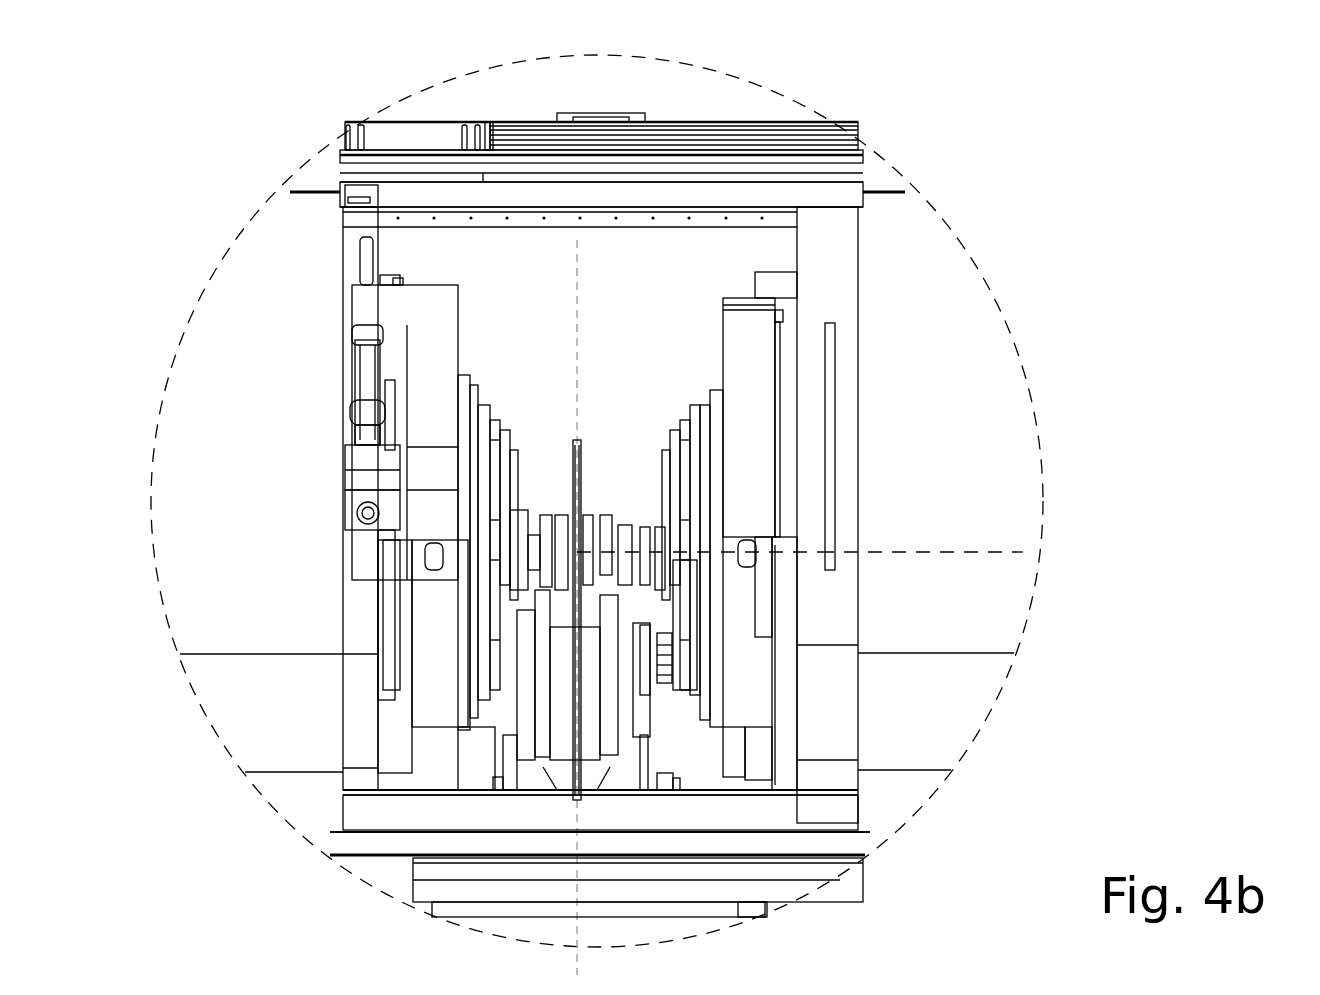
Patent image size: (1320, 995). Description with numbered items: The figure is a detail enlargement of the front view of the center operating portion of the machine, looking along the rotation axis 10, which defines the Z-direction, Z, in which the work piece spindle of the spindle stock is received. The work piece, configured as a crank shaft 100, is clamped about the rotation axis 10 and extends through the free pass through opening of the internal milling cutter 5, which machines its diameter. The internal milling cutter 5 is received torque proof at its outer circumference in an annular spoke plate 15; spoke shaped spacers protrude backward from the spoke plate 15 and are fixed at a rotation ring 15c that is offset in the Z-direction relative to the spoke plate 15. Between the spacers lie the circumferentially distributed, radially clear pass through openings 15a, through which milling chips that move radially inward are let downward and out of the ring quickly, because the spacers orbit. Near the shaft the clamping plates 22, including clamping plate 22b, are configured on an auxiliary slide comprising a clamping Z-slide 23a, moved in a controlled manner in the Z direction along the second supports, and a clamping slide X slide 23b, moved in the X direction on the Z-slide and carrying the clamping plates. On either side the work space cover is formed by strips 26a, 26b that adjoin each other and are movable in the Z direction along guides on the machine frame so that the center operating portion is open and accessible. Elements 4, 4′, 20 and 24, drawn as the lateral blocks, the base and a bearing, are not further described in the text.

The first bearing block 4 is at (405, 408).
The second bearing block 4′ is at (760, 404).
The internal milling cutter 5 is at (512, 470).
The rotation axis 10 is at (799, 523).
The Z-direction Z is at (950, 552).
The annular spoke plate 15 is at (500, 423).
The pass through openings 15a is at (503, 447).
The rotation ring 15c is at (490, 405).
The base 20 is at (577, 953).
The clamping plates 22 is at (578, 452).
The clamping plate 22b is at (577, 620).
The clamping Z-slide 23a is at (493, 780).
The clamping slide X slide 23b is at (592, 760).
The drive bearing 24 is at (520, 575).
The strip of work space cover 26a is at (261, 531).
The strip of work space cover 26b is at (936, 532).
The crank shaft 100 is at (620, 520).